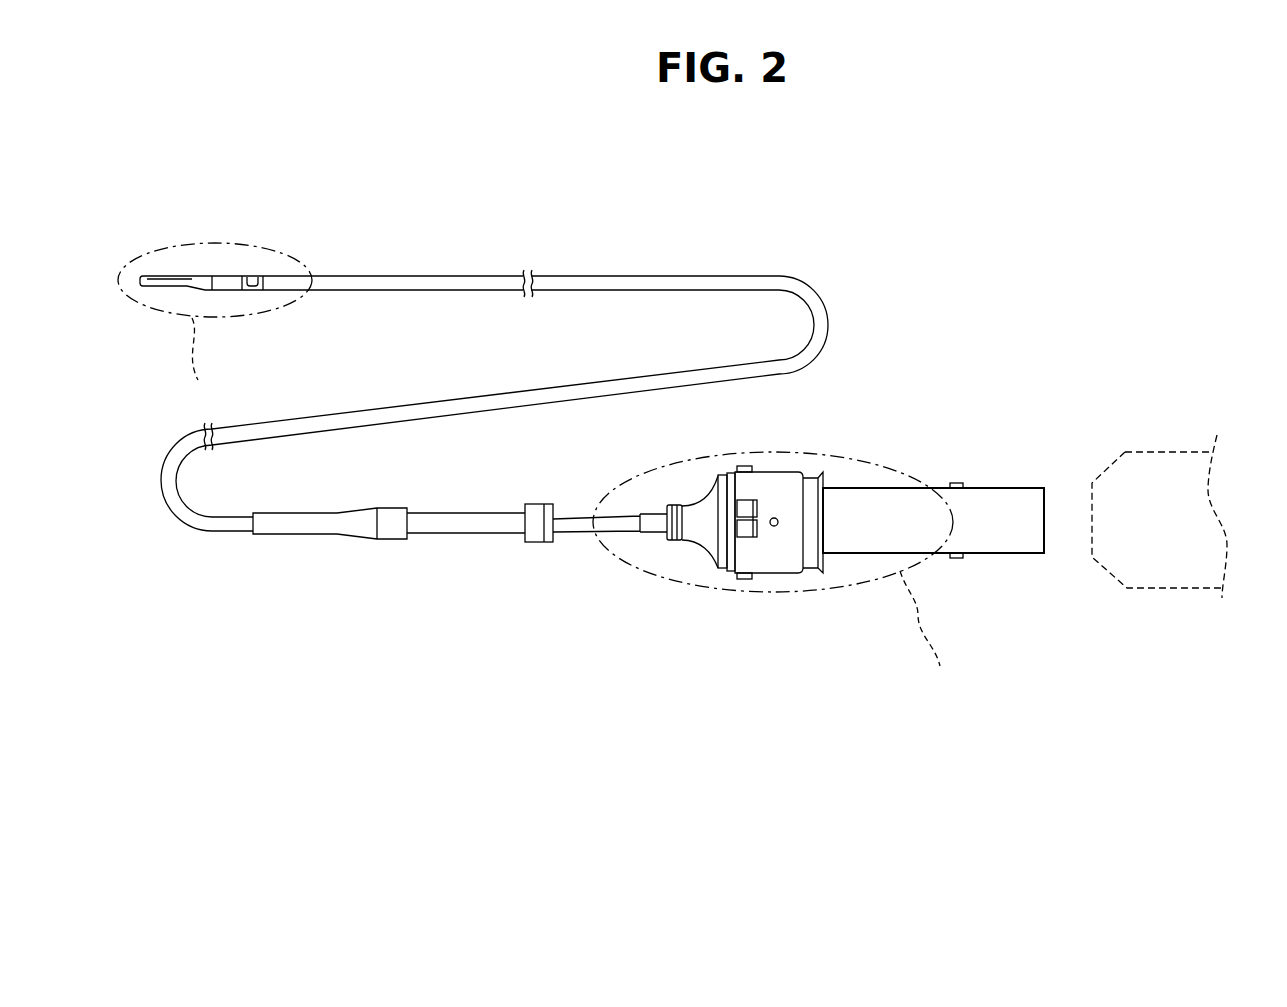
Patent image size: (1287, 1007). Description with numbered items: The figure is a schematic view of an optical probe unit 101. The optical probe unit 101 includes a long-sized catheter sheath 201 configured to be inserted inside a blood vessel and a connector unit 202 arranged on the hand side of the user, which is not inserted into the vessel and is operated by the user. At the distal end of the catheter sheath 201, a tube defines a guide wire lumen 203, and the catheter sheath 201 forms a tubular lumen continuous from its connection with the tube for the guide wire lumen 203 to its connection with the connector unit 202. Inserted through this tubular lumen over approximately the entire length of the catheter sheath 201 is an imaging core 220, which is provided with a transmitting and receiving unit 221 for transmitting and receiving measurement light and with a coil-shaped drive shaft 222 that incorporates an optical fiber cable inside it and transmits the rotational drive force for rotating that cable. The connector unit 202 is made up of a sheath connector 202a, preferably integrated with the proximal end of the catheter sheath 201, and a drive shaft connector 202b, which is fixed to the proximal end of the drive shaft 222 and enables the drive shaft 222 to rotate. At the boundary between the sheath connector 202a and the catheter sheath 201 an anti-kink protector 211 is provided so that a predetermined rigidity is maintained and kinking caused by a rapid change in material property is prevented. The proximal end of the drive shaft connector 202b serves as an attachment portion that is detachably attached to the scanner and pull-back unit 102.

The optical probe unit 101 is at (237, 577).
The scanner and pull-back unit 102 is at (1175, 590).
The catheter sheath 201 is at (215, 227).
The connector unit 202 is at (268, 675).
The sheath connector 202a is at (268, 602).
The drive shaft connector 202b is at (553, 602).
The guide wire lumen 203 is at (172, 276).
The anti-kink protector 211 is at (305, 513).
The imaging core 220 is at (582, 329).
The transmitting and receiving unit 221 is at (257, 287).
The drive shaft 222 is at (642, 292).